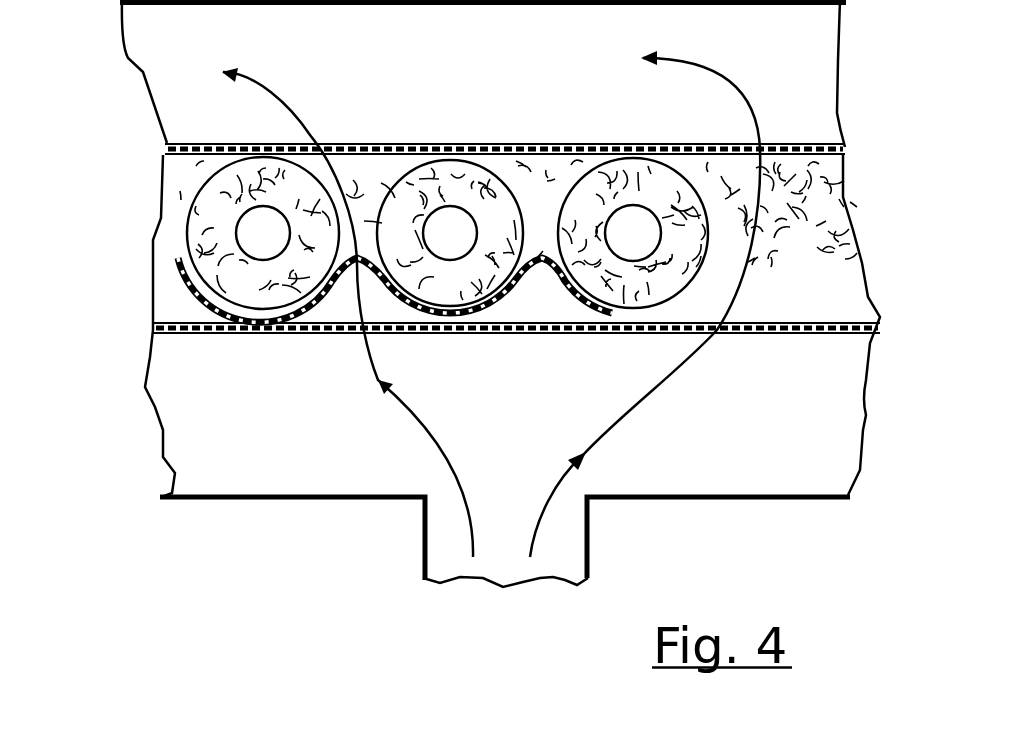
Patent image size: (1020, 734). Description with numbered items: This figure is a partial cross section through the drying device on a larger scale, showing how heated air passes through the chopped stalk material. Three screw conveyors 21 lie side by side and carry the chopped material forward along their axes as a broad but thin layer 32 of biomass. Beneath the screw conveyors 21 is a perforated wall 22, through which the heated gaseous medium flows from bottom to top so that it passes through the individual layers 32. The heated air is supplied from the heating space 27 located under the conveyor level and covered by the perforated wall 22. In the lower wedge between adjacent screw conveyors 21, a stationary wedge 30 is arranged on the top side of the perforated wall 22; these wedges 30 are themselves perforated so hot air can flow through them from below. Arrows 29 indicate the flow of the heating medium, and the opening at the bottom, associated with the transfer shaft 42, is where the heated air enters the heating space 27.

The screw conveyor 21 is at (185, 298).
The perforated wall 22 is at (400, 147).
The heating space 27 is at (175, 42).
The flow path arrow 29 is at (397, 407).
The stationary wedge 30 is at (328, 333).
The layer 32 is at (177, 180).
The transfer shaft 42 is at (558, 532).